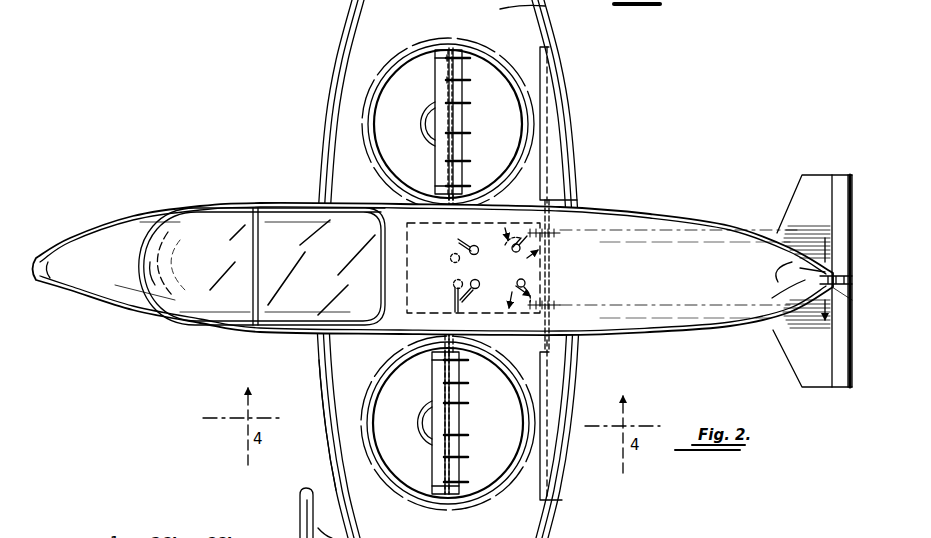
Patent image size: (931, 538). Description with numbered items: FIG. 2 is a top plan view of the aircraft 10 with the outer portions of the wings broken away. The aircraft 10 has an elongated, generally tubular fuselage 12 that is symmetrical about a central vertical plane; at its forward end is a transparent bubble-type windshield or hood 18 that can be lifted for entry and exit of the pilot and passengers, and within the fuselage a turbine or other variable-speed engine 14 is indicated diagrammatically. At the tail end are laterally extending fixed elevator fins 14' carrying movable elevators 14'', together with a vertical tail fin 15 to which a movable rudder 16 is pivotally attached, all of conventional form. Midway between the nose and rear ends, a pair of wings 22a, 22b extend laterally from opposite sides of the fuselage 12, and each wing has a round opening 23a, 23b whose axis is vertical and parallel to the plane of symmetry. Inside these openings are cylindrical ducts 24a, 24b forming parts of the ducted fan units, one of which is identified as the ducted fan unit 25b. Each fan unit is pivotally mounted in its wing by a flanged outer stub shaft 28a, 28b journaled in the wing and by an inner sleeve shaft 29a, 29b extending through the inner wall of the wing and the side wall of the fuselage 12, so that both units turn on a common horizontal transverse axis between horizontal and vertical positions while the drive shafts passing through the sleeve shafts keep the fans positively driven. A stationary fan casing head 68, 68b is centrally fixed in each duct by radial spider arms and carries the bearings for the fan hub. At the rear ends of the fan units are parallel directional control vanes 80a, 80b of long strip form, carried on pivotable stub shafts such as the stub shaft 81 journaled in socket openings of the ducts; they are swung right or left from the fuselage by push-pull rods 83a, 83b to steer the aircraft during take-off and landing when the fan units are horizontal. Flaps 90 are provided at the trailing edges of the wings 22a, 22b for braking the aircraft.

The aircraft 10 is at (258, 350).
The fuselage 12 is at (118, 308).
The engine 14 is at (478, 276).
The fixed elevator fins 14' is at (801, 280).
The movable elevators 14'' is at (834, 273).
The vertical tail fin 15 is at (805, 282).
The movable rudder 16 is at (838, 273).
The transparent bubble-type windshield or hood 18 is at (213, 205).
The wing 22a is at (340, 478).
The wing 22b is at (356, 86).
The round opening 23a is at (374, 408).
The round opening 23b is at (388, 172).
The cylindrical duct 24a is at (444, 466).
The cylindrical duct 24b is at (444, 164).
The ducted fan unit 25b is at (465, 148).
The flanged outer stub shaft 28a is at (455, 497).
The flanged outer stub shaft 28b is at (455, 50).
The inner sleeve shaft 29a is at (430, 352).
The inner sleeve shaft 29b is at (447, 228).
The stationary fan casing head 68 is at (430, 422).
The stationary fan casing head 68b is at (430, 124).
The directional control vane 80a is at (470, 435).
The directional control vane 80b is at (470, 133).
The pivotable stub shaft 81 is at (448, 106).
The push-pull rod 83a is at (452, 287).
The push-pull rod 83b is at (452, 255).
The flap 90 is at (560, 122).